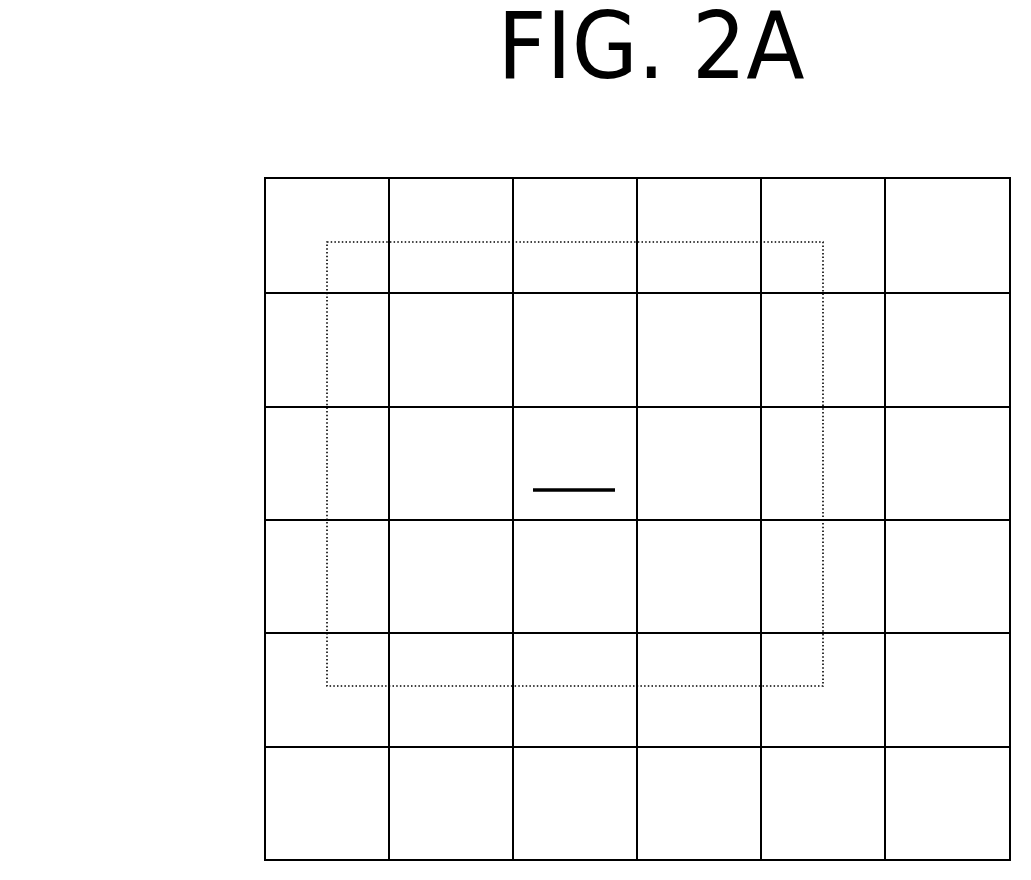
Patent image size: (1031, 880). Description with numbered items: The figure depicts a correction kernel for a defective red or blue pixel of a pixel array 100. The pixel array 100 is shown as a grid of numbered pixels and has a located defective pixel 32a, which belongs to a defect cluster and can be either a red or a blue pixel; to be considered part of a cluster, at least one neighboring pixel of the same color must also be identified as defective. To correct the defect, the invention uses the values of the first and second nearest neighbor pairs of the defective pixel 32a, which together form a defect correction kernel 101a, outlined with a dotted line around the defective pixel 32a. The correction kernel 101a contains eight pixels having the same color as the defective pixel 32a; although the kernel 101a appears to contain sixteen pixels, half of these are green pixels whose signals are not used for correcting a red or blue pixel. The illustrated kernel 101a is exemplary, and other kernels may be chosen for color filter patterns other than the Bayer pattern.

The pixel array 100 is at (110, 149).
The correction kernel 101a is at (327, 432).
The defective pixel 32a is at (574, 467).